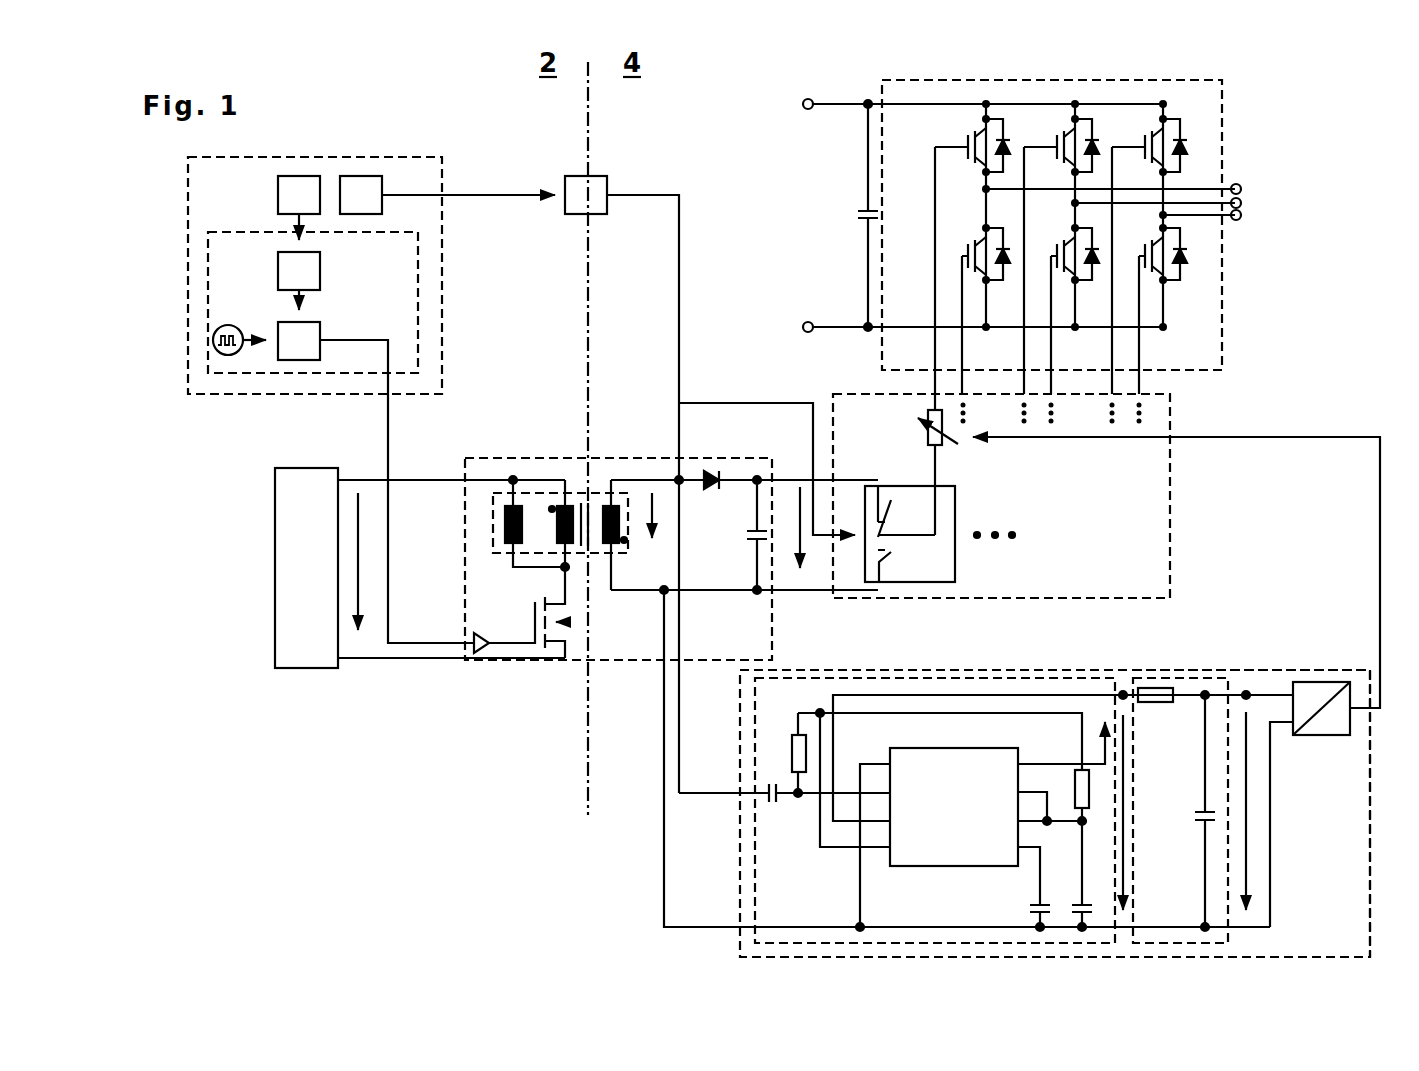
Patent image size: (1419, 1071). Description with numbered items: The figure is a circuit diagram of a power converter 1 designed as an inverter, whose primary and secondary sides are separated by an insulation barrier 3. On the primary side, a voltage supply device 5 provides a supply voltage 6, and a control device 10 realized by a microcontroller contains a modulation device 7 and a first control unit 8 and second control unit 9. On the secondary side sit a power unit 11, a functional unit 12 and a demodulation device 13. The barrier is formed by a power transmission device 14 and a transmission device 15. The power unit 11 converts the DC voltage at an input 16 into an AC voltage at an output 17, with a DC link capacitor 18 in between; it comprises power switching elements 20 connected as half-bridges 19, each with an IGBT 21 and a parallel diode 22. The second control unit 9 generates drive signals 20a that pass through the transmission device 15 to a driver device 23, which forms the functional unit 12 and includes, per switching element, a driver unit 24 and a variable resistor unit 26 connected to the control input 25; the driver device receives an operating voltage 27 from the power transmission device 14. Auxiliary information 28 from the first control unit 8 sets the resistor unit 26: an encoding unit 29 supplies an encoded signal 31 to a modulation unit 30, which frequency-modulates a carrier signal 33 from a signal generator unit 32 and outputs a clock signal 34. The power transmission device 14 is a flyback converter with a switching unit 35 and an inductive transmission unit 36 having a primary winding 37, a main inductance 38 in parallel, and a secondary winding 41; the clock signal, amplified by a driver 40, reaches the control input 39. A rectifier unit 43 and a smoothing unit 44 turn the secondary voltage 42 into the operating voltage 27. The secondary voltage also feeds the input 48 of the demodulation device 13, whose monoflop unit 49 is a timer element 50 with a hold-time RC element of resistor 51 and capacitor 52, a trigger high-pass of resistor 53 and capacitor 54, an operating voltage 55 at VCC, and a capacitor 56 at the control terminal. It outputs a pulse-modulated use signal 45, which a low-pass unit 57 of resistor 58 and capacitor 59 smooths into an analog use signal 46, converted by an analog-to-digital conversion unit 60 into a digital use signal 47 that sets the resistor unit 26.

The power converter 1 is at (1335, 100).
The insulation barrier 3 is at (588, 804).
The voltage supply device 5 is at (275, 566).
The supply voltage 6 is at (358, 523).
The modulation device 7 is at (420, 300).
The first control unit 8 is at (302, 176).
The second control unit 9 is at (362, 176).
The control device 10 is at (412, 157).
The power unit 11 is at (1222, 272).
The functional unit 12 is at (1205, 395).
The demodulation device 13 is at (740, 845).
The power transmission device 14 is at (480, 458).
The transmission device 15 is at (598, 176).
The input 16 is at (770, 175).
The output 17 is at (1258, 183).
The DC link capacitor 18 is at (858, 212).
The half-bridge 19 is at (1010, 112).
The power switching element 20 is at (962, 172).
The drive signal 20a is at (487, 192).
The IGBT 21 is at (940, 130).
The diode 22 is at (1012, 138).
The driver device 23 is at (1170, 430).
The driver unit 24 is at (955, 560).
The control input 25 is at (962, 148).
The resistor unit 26 is at (928, 430).
The operating voltage 27 is at (800, 488).
The auxiliary information 28 is at (299, 226).
The encoding unit 29 is at (278, 270).
The modulation unit 30 is at (310, 362).
The encoded signal 31 is at (299, 298).
The signal generator unit 32 is at (228, 355).
The carrier signal 33 is at (262, 345).
The clock signal 34 is at (390, 428).
The switching unit 35 is at (520, 600).
The inductive transmission unit 36 is at (575, 493).
The primary winding 37 is at (555, 515).
The main inductance 38 is at (505, 525).
The control input 39 is at (546, 655).
The driver 40 is at (481, 655).
The secondary winding 41 is at (630, 505).
The secondary voltage 42 is at (625, 522).
The rectifier unit 43 is at (712, 472).
The smoothing unit 44 is at (757, 560).
The pulse-modulated use signal 45 is at (1126, 840).
The analog use signal 46 is at (1275, 772).
The digital use signal 47 is at (1380, 437).
The input 48 is at (712, 876).
The monoflop unit 49 is at (738, 810).
The timer element 50 is at (955, 748).
The resistor 51 is at (1092, 785).
The capacitor 52 is at (1092, 900).
The resistor 53 is at (792, 748).
The capacitor 54 is at (782, 800).
The operating voltage 55 is at (1108, 725).
The capacitor 56 is at (1035, 905).
The low-pass unit 57 is at (1215, 670).
The resistor 58 is at (1153, 688).
The capacitor 59 is at (1250, 830).
The analog-to-digital conversion unit 60 is at (1320, 682).